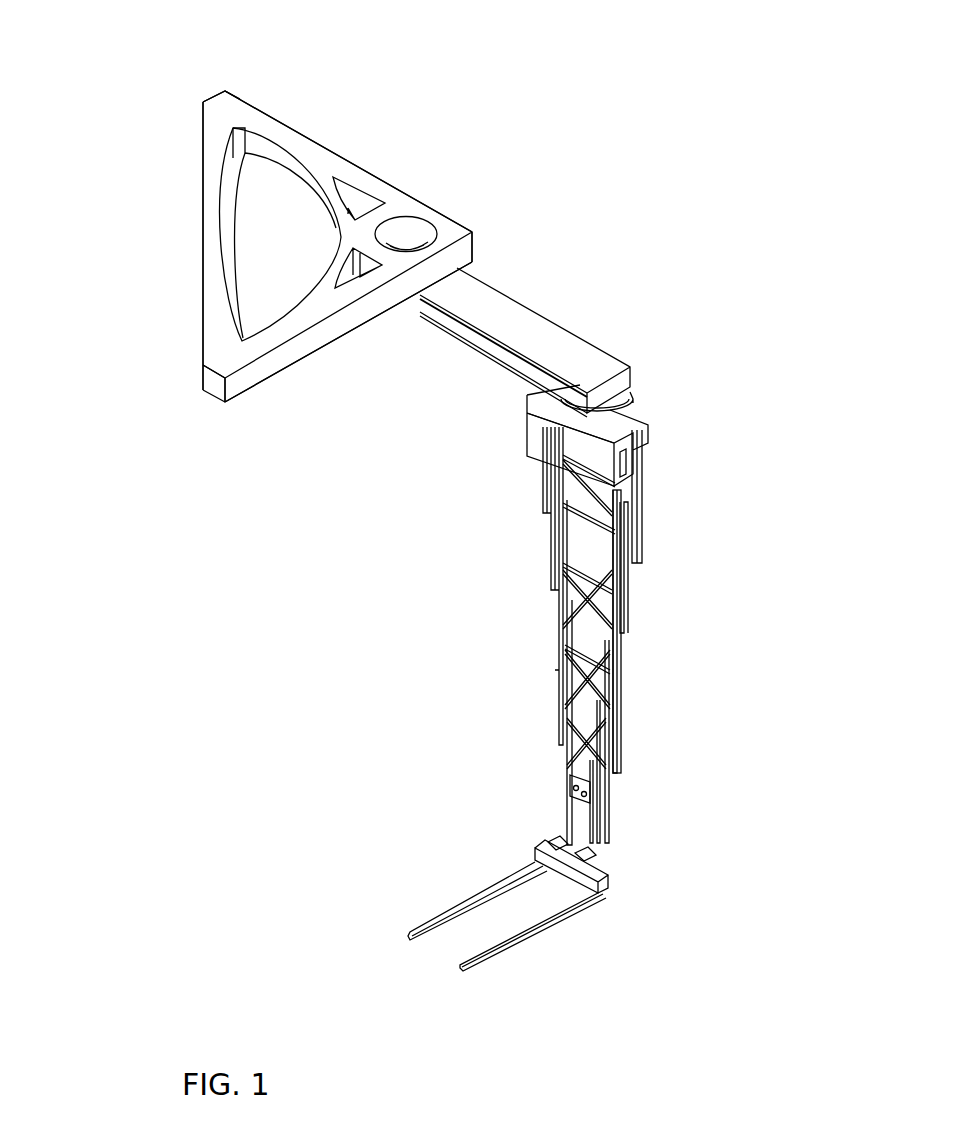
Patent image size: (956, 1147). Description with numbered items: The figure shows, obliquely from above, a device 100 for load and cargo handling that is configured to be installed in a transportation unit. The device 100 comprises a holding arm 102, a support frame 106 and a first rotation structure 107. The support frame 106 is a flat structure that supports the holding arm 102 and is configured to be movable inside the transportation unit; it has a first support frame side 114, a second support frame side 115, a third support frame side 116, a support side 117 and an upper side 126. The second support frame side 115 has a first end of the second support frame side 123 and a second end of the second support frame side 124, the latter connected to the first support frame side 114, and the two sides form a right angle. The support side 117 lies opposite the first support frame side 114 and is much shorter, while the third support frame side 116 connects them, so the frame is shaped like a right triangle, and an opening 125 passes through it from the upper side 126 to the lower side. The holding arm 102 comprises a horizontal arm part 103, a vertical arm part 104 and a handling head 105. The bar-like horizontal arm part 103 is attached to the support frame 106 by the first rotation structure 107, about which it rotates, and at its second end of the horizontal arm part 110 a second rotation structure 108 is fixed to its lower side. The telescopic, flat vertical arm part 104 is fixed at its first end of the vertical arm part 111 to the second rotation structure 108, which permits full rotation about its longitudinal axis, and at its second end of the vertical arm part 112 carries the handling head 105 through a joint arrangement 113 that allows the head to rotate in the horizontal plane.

The device 100 is at (93, 32).
The holding arm 102 is at (656, 607).
The horizontal arm part 103 is at (527, 325).
The vertical arm part 104 is at (622, 742).
The handling head 105 is at (472, 892).
The support frame 106 is at (379, 166).
The first rotation structure 107 is at (415, 240).
The second rotation structure 108 is at (538, 422).
The second end of the horizontal arm part 110 is at (618, 387).
The first end of the vertical arm part 111 is at (622, 417).
The second end of the vertical arm part 112 is at (603, 857).
The joint arrangement 113 is at (558, 848).
The first support frame side 114 is at (290, 355).
The second support frame side 115 is at (312, 138).
The third support frame side 116 is at (200, 252).
The support side 117 is at (217, 93).
The first end of the second support frame side 123 is at (225, 91).
The second end of the second support frame side 124 is at (472, 236).
The opening 125 is at (253, 223).
The upper side 126 is at (220, 332).